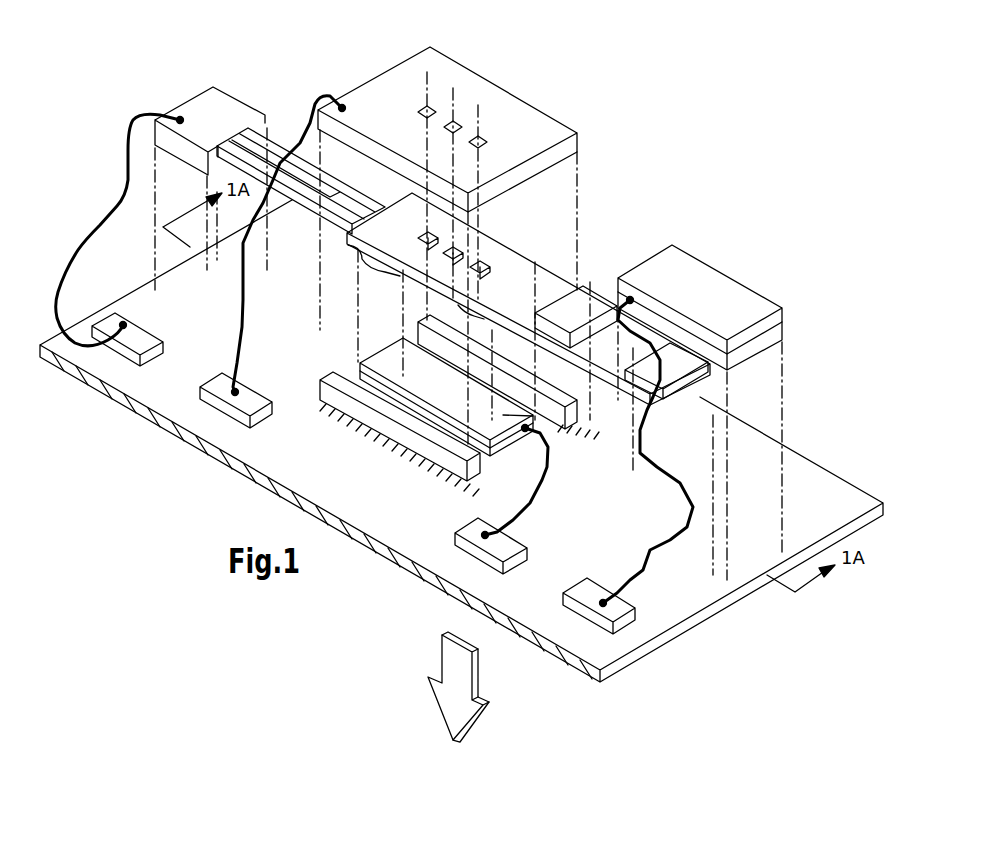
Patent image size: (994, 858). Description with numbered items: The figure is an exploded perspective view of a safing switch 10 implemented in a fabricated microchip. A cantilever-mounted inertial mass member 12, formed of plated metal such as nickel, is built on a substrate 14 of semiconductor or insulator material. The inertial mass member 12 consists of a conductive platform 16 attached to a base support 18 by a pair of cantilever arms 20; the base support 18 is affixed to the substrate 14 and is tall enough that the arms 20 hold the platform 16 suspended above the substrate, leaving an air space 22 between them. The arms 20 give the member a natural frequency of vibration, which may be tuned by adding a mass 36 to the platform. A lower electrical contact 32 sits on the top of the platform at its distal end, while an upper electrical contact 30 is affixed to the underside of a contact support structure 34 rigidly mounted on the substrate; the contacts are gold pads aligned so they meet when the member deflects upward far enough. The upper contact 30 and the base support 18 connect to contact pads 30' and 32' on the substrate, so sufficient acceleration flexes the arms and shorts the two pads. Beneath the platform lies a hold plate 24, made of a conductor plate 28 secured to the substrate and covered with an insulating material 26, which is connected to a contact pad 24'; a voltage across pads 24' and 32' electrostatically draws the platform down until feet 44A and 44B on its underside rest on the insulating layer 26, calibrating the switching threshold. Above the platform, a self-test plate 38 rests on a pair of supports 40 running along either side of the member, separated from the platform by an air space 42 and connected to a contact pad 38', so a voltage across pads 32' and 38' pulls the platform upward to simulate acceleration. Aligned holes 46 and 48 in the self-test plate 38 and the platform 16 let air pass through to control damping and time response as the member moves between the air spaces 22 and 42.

The safing switch 10 is at (590, 127).
The inertial mass member 12 is at (548, 262).
The substrate 14 is at (805, 473).
The platform 16 is at (503, 302).
The base support 18 is at (218, 88).
The cantilever arms 20 is at (283, 140).
The air space 22 is at (638, 432).
The hold plate 24 is at (446, 379).
The contact pad 24' is at (500, 557).
The insulating material 26 is at (537, 430).
The conductor plate 28 is at (498, 447).
The upper electrical contact 30 is at (697, 298).
The contact pad 30' is at (615, 639).
The lower electrical contact 32 is at (666, 394).
The contact pad 32' is at (138, 354).
The contact support structure 34 is at (776, 300).
The mass 36 is at (583, 284).
The self-test plate 38 is at (447, 114).
The contact pad 38' is at (245, 415).
The supports 40 is at (463, 484).
The air space 42 is at (513, 268).
The foot 44A is at (377, 266).
The foot 44B is at (473, 328).
The holes 46 is at (478, 148).
The holes 48 is at (482, 262).